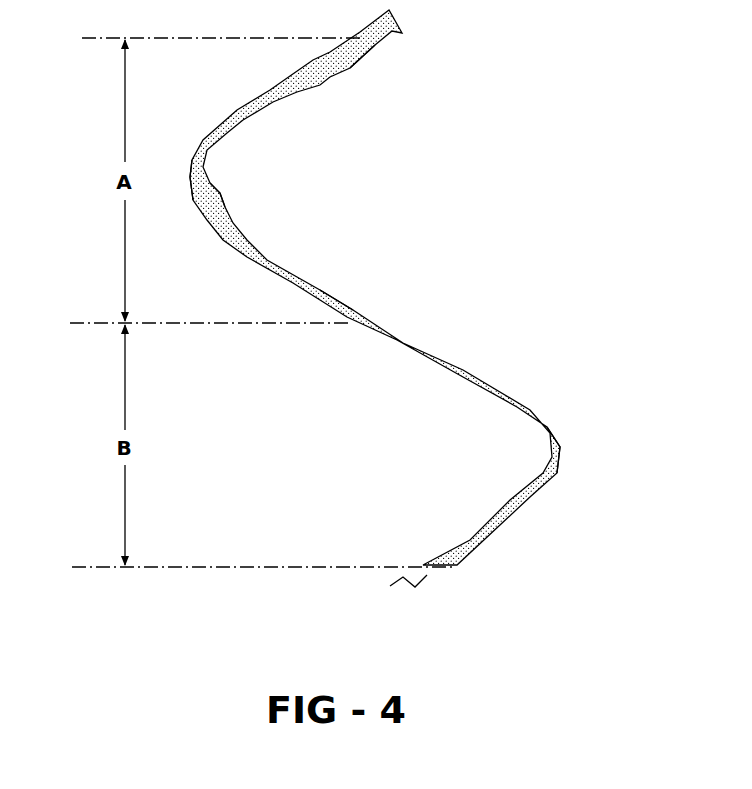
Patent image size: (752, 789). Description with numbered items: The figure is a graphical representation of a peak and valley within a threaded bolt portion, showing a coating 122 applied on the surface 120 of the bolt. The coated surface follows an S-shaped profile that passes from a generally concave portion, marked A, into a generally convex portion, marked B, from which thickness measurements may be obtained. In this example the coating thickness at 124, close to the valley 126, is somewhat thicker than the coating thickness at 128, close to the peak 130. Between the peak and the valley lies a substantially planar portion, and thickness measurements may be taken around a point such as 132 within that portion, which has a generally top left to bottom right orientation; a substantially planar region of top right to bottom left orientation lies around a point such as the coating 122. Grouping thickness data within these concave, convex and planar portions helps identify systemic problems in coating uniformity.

The surface 120 is at (274, 91).
The coating 122 is at (320, 87).
The coating thickness close to a valley 124 is at (213, 203).
The valley 126 is at (188, 178).
The coating thickness close to a peak 128 is at (543, 413).
The peak 130 is at (432, 462).
The point within substantially planar portion 132 is at (343, 307).